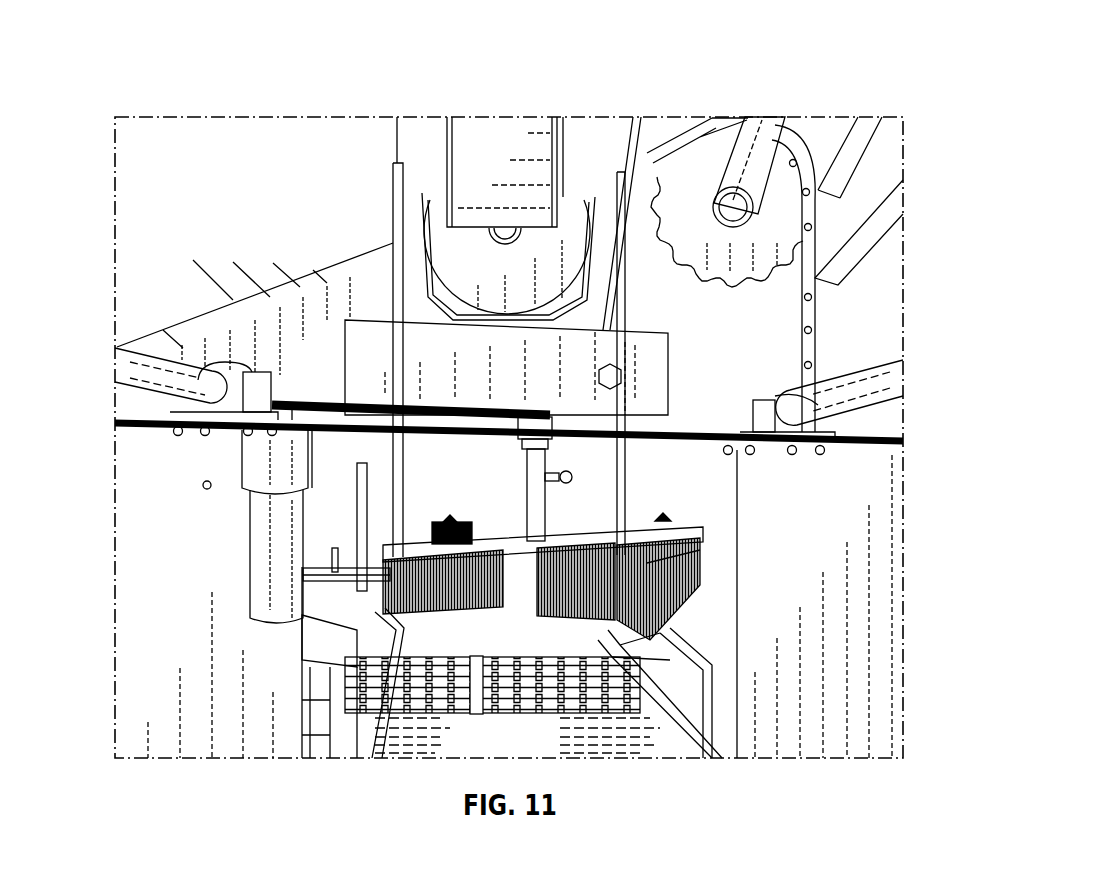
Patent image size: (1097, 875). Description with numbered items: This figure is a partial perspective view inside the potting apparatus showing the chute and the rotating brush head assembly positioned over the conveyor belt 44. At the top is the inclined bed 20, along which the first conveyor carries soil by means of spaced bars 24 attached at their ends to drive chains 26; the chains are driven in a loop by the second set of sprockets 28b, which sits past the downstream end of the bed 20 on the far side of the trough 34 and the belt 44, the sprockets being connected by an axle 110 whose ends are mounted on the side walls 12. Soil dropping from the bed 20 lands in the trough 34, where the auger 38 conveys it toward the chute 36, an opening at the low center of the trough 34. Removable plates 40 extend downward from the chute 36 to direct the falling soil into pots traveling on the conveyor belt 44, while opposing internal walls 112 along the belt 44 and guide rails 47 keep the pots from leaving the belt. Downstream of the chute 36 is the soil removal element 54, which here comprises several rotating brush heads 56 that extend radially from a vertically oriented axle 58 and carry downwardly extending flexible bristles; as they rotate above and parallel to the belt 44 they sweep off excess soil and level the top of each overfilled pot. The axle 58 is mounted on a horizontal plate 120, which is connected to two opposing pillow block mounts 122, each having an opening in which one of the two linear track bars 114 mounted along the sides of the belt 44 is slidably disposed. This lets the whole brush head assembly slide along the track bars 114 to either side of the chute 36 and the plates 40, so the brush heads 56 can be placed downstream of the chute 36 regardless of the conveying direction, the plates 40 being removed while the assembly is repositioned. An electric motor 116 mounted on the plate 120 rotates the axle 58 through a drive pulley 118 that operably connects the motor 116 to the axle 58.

The bed 20 is at (170, 244).
The side walls 12 is at (315, 381).
The trough 34 is at (576, 132).
The chute 36 is at (421, 238).
The auger 38 is at (572, 243).
The plates 40 is at (392, 270).
The bars 24 is at (727, 123).
The axle 110 is at (760, 130).
The second set of sprockets 28b is at (807, 130).
The drive chains 26 is at (816, 318).
The track bars 114 is at (140, 376).
The pillow block mounts 122 is at (230, 362).
The electric motor 116 is at (252, 475).
The horizontal plate 120 is at (390, 483).
The drive pulley 118 is at (452, 418).
The vertically oriented axle 58 is at (528, 510).
The soil removal element 54 is at (680, 524).
The rotating brush heads 56 is at (673, 613).
The guide rails 47 is at (717, 742).
The conveyor belt 44 is at (524, 746).
The internal walls 112 is at (177, 649).